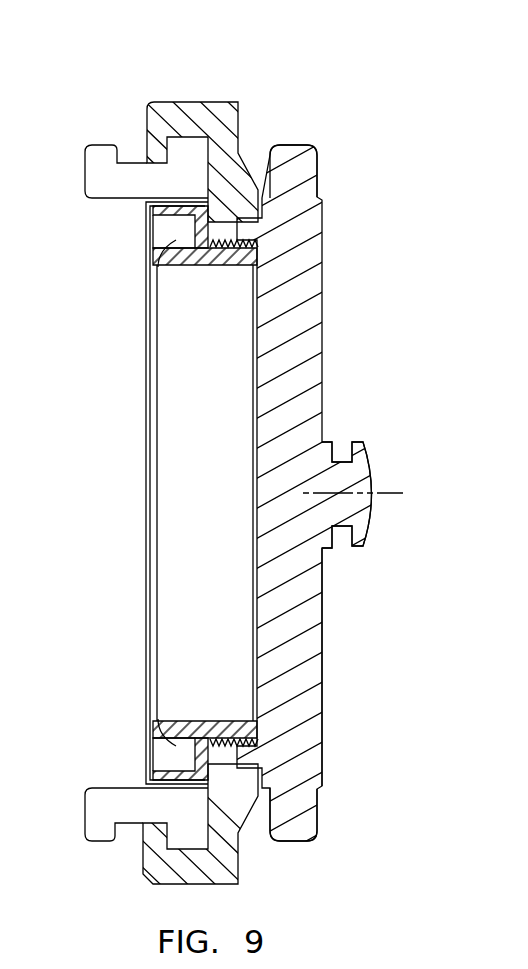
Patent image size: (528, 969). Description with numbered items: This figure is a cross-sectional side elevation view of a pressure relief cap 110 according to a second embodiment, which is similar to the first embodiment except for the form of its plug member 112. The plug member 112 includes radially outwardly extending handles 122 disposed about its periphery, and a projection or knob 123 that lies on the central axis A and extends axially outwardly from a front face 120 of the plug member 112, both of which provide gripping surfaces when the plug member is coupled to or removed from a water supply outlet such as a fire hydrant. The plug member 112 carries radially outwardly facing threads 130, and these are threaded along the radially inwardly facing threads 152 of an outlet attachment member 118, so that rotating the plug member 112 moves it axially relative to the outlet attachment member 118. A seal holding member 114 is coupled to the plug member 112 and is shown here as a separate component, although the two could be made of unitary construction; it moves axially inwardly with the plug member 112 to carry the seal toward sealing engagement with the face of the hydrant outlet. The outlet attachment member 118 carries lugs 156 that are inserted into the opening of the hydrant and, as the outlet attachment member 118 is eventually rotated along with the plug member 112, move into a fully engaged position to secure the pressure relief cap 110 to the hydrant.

The pressure relief cap 110 is at (347, 131).
The plug member 112 is at (355, 346).
The seal holding member 114 is at (200, 705).
The outlet attachment member 118 is at (173, 103).
The front face 120 is at (321, 728).
The handles 122 is at (320, 178).
The projection or knob 123 is at (366, 452).
The outwardly facing threads 130 is at (222, 242).
The inwardly facing threads 152 is at (268, 240).
The lugs 156 is at (86, 177).
The central axis A is at (374, 490).